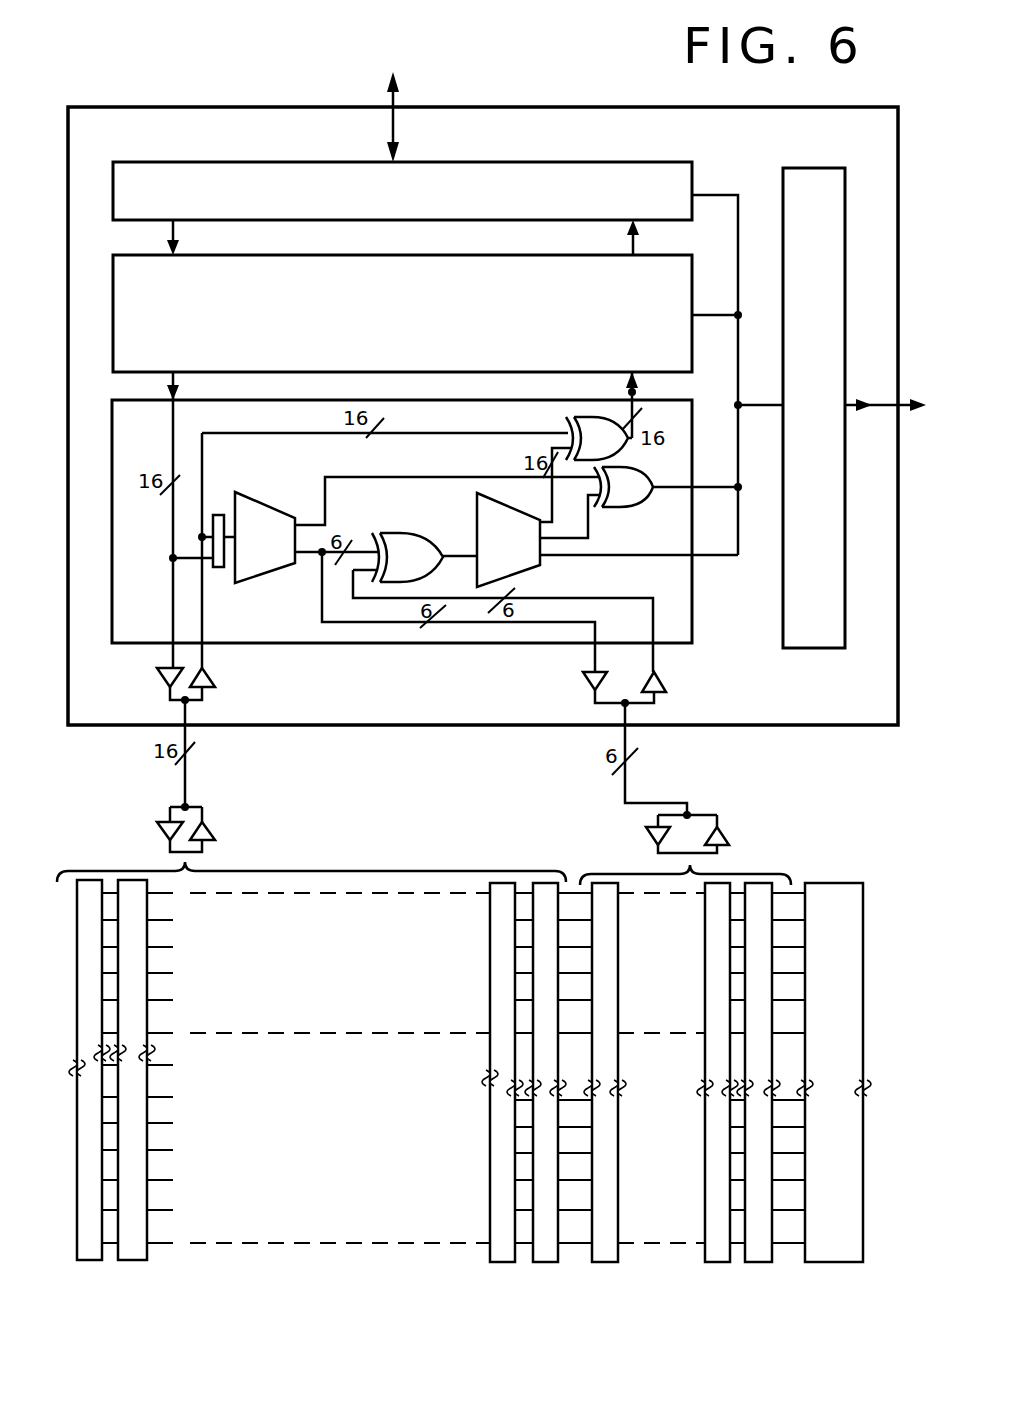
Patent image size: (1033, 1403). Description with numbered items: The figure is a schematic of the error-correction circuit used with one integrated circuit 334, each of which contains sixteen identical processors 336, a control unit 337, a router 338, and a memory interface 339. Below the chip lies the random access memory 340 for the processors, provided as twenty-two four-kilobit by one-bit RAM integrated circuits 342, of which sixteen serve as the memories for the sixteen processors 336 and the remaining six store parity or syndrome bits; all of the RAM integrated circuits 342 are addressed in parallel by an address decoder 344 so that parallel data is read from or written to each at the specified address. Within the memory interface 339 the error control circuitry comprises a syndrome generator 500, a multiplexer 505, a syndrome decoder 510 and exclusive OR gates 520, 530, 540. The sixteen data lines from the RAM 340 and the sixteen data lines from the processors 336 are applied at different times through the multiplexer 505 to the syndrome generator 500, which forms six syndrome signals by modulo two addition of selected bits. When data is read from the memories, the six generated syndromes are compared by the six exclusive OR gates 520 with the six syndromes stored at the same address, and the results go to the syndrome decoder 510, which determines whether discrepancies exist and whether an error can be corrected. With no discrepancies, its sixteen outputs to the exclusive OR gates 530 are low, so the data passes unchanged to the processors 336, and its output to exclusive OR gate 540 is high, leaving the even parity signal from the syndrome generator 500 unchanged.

The integrated circuit 334 is at (898, 728).
The processors 336 is at (402, 313).
The control unit 337 is at (814, 408).
The router 338 is at (402, 191).
The memory interface 339 is at (274, 655).
The random access memory 340 is at (470, 1071).
The RAM integrated circuits 342 is at (470, 1071).
The address decoder 344 is at (834, 1072).
The syndrome generator 500 is at (268, 506).
The multiplexer 505 is at (219, 582).
The syndrome decoder 510 is at (518, 580).
The exclusive OR gates 520 is at (429, 544).
The exclusive OR gates 530 is at (564, 430).
The exclusive OR gate 540 is at (640, 505).